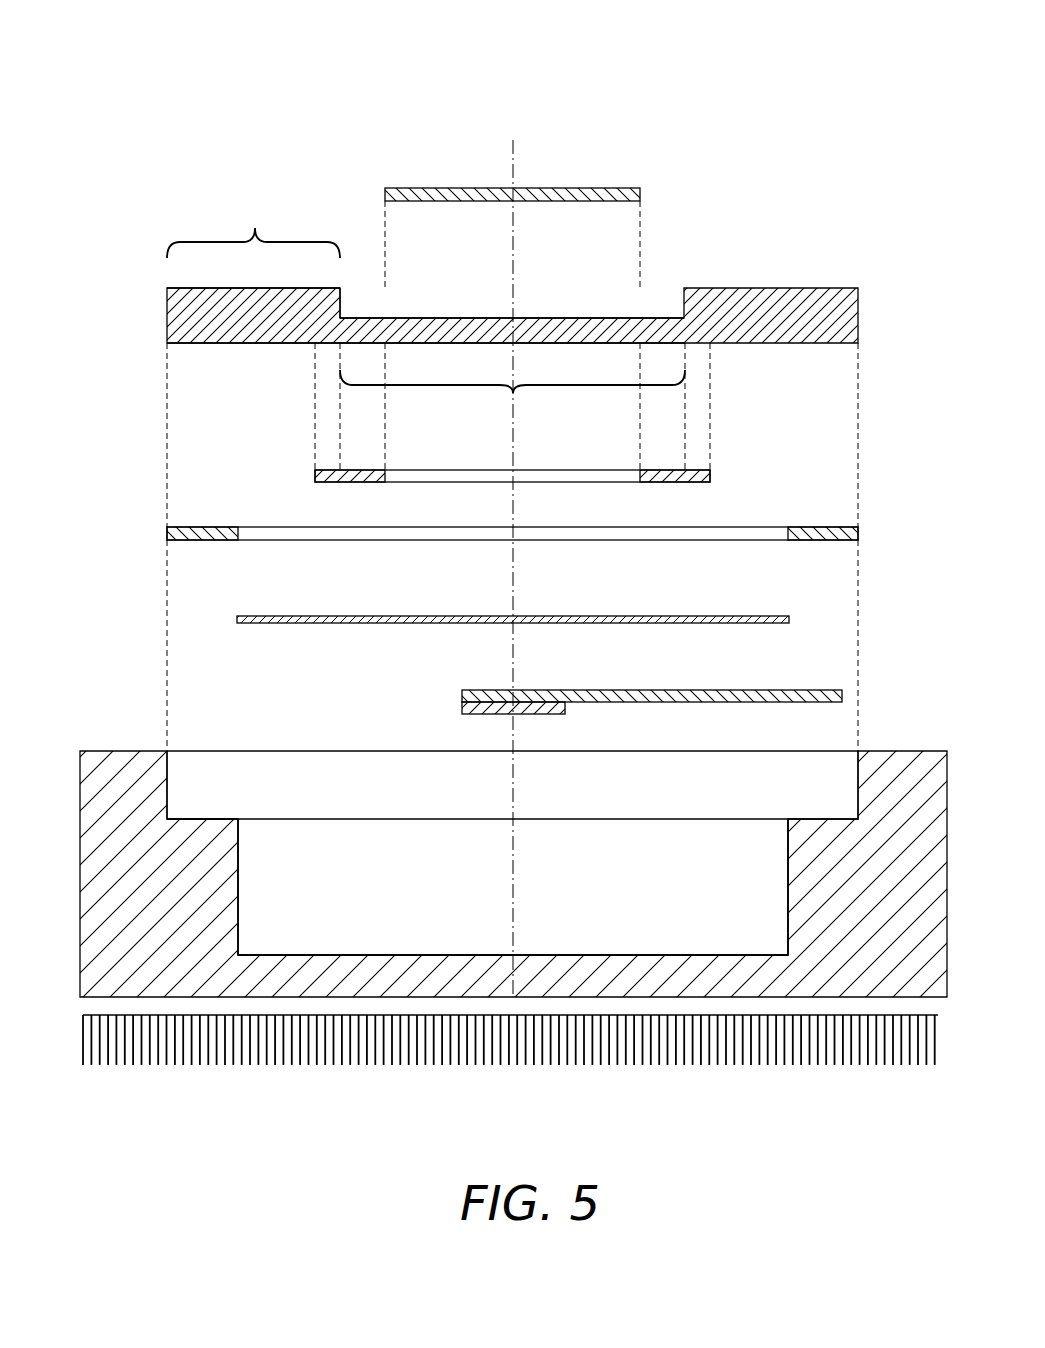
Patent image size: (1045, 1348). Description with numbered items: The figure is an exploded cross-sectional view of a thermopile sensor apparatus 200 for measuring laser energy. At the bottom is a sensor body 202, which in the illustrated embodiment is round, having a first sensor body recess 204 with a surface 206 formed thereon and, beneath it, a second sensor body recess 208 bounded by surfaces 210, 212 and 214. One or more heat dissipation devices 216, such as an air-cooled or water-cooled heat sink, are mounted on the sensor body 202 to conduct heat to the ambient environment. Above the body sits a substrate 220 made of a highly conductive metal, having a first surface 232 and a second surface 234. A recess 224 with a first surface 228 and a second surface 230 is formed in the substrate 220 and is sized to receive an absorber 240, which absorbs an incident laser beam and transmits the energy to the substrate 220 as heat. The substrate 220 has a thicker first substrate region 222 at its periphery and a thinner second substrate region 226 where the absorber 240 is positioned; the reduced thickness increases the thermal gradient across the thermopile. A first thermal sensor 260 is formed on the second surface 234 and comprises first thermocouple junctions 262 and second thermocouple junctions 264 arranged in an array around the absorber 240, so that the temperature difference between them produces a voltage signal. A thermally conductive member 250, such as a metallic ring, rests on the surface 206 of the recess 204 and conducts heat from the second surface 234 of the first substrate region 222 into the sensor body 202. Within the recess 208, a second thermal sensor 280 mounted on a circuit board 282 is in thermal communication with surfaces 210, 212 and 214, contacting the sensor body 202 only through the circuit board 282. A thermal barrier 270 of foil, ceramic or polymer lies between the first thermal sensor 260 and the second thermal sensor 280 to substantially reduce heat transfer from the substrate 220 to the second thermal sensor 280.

The thermopile sensor apparatus 200 is at (180, 157).
The sensor body 202 is at (80, 875).
The first sensor body recess 204 is at (304, 800).
The surface 206 is at (208, 819).
The second sensor body recess 208 is at (396, 855).
The surface 210 is at (385, 955).
The surface 212 is at (238, 912).
The surface 214 is at (788, 900).
The heat dissipation devices 216 is at (83, 1040).
The substrate 220 is at (167, 318).
The first substrate region 222 is at (253, 230).
The recess 224 is at (372, 300).
The second substrate region 226 is at (513, 393).
The first surface 228 is at (550, 318).
The second surface 230 is at (482, 347).
The first surface 232 is at (195, 288).
The second surface 234 is at (220, 343).
The absorber 240 is at (450, 188).
The thermally conductive member 250 is at (167, 532).
The first thermal sensor 260 is at (712, 478).
The first thermocouple junctions 262 is at (658, 470).
The second thermocouple junctions 264 is at (683, 470).
The thermal barrier 270 is at (237, 619).
The second thermal sensor 280 is at (462, 708).
The circuit board 282 is at (470, 690).